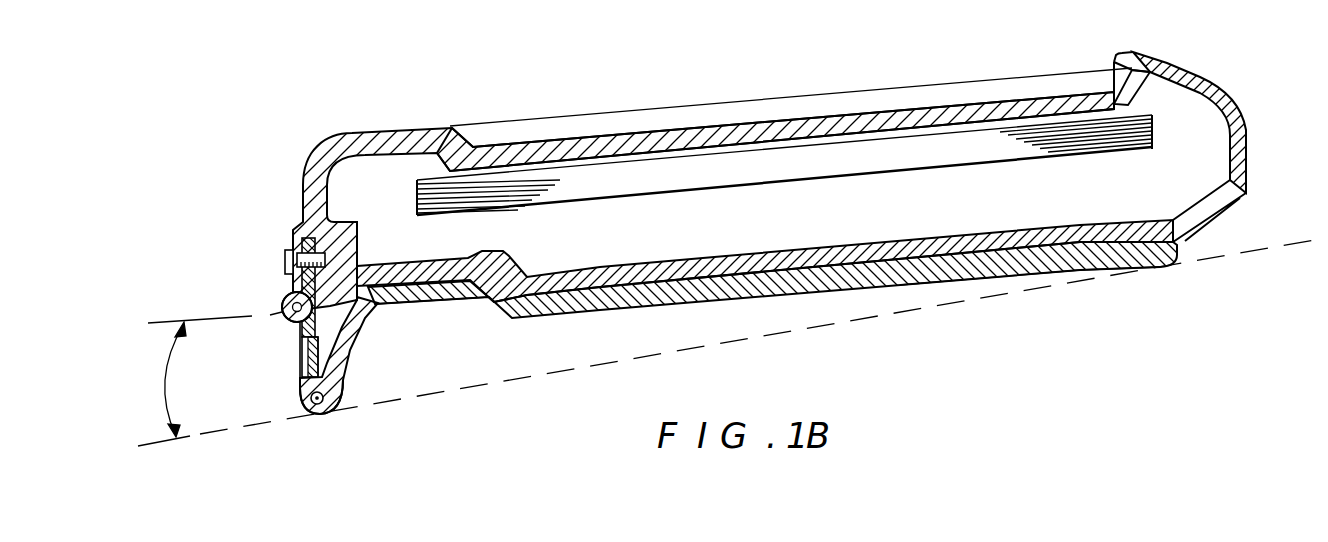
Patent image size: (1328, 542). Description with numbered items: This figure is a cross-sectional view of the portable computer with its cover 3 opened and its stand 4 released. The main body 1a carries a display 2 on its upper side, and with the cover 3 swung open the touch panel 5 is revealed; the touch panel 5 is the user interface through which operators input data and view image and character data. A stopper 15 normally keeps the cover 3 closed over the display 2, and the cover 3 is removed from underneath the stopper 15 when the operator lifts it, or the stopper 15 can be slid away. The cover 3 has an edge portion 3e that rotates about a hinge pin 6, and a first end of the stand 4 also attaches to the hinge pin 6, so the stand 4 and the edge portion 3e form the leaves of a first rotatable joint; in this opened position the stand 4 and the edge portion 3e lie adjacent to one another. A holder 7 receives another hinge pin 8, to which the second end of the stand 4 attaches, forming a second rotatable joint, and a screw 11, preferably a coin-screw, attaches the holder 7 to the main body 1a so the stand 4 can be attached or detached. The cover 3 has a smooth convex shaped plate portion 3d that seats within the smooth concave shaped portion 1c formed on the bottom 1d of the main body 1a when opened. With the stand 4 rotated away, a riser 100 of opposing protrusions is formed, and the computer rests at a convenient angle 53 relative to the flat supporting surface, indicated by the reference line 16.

The main body 1a is at (490, 160).
The smooth concave shaped portion 1c is at (453, 298).
The bottom 1d is at (917, 267).
The display 2 is at (842, 160).
The cover 3 is at (650, 306).
The smooth convex shaped plate portion 3d is at (420, 280).
The edge portion 3e is at (366, 312).
The stand 4 is at (300, 350).
The touch panel 5 is at (683, 147).
The hinge pin 6 is at (304, 403).
The holder 7 is at (296, 282).
The hinge pin 8 is at (282, 311).
The screw 11 is at (285, 252).
The stopper 15 is at (1170, 70).
The reference line 16 is at (1290, 246).
The angle 53 is at (168, 382).
The riser 100 is at (320, 416).